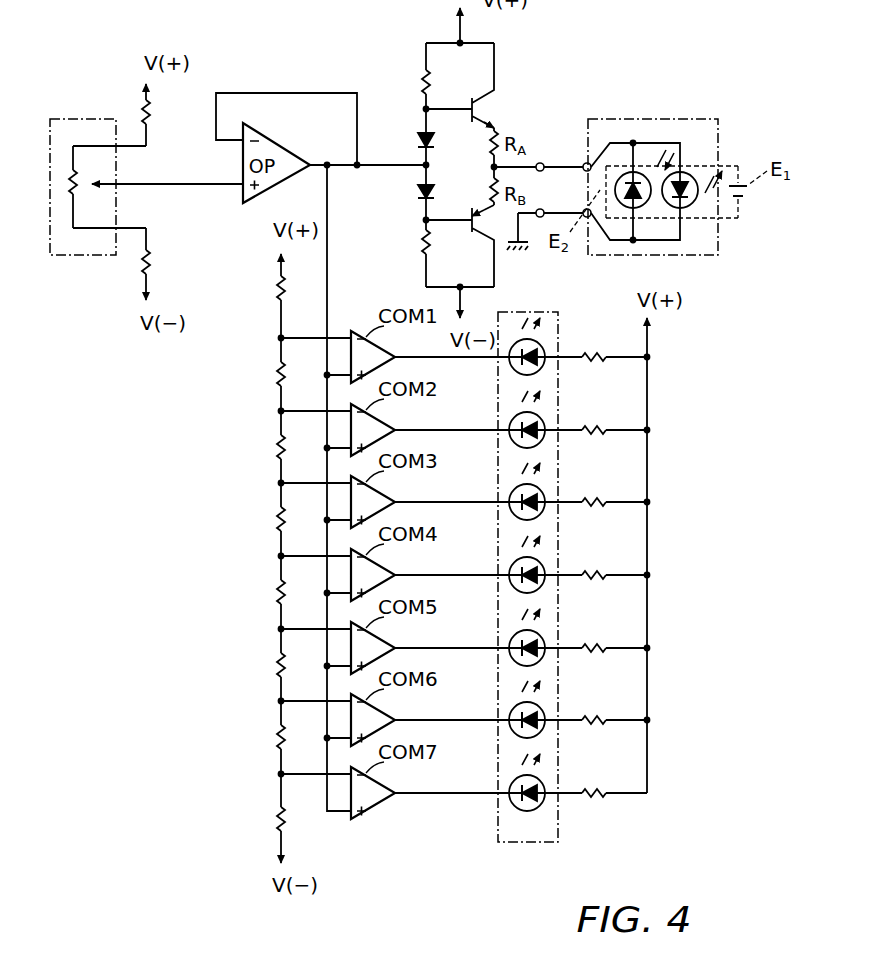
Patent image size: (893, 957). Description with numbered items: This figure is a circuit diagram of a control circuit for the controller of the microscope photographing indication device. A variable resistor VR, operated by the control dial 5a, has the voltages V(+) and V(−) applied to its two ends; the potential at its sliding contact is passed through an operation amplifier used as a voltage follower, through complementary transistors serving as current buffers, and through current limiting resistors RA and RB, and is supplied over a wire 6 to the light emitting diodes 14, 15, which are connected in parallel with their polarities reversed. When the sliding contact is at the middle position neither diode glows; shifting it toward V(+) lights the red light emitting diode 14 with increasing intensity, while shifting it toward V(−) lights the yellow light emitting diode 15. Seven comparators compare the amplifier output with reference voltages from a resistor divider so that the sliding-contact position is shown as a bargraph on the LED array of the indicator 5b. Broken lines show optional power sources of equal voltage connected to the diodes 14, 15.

The control dial 5a is at (75, 256).
The indicator 5b is at (539, 843).
The wire 6 is at (557, 208).
The light emitting diode 14 is at (689, 160).
The light emitting diode 15 is at (616, 158).